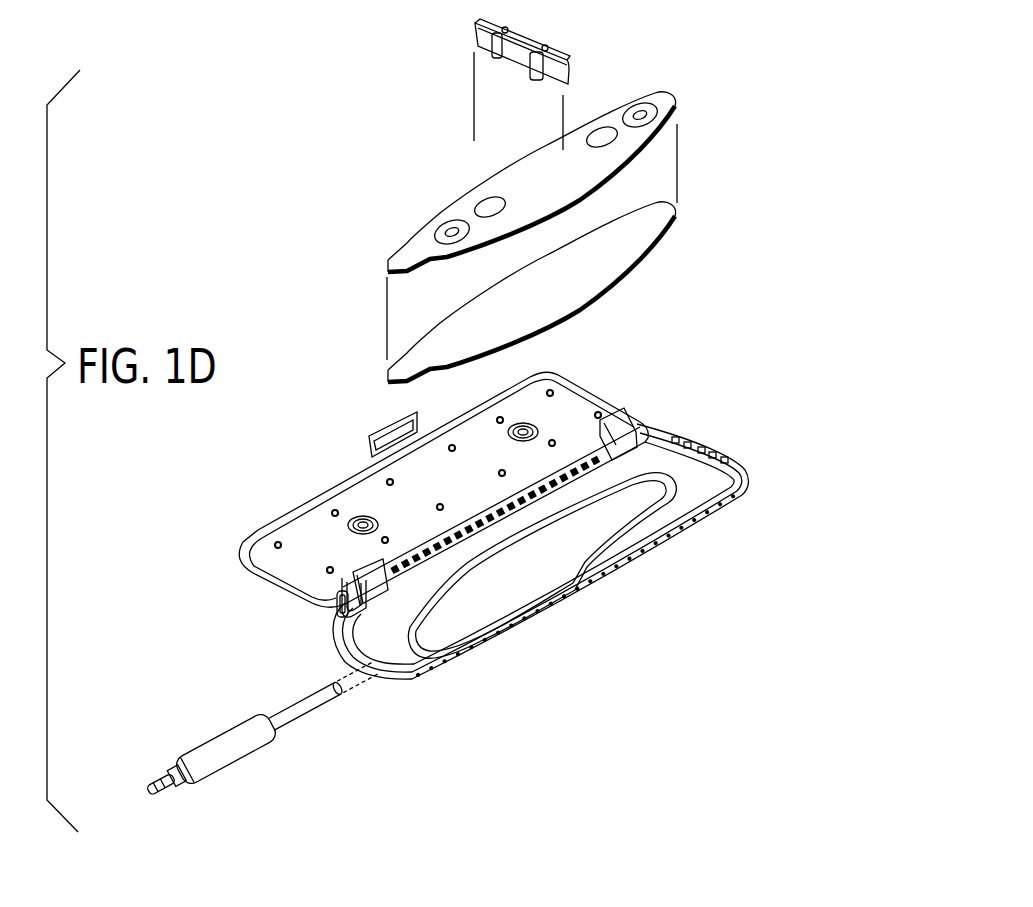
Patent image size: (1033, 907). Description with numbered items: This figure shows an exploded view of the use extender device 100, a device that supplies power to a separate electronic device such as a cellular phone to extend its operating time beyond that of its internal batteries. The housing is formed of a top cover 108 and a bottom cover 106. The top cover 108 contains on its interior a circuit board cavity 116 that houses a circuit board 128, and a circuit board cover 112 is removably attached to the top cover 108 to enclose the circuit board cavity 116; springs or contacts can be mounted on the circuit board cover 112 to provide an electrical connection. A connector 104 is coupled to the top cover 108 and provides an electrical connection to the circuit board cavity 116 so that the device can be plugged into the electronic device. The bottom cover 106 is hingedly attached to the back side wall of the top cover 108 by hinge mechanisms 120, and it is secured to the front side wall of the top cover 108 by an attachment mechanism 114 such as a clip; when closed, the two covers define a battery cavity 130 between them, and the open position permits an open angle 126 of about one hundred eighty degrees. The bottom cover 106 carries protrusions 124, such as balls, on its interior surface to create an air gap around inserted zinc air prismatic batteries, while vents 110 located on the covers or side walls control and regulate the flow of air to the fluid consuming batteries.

The use extender device 100 is at (752, 276).
The connector 104 is at (210, 768).
The bottom cover 106 is at (597, 383).
The top cover 108 is at (663, 425).
The vents 110 is at (720, 452).
The circuit board cover 112 is at (603, 118).
The attachment mechanism 114 is at (603, 560).
The circuit board cavity 116 is at (513, 590).
The hinge mechanisms 120 is at (357, 568).
The protrusions 124 is at (376, 481).
The open angle 126 is at (323, 627).
The circuit board 128 is at (648, 235).
The battery cavity 130 is at (700, 482).